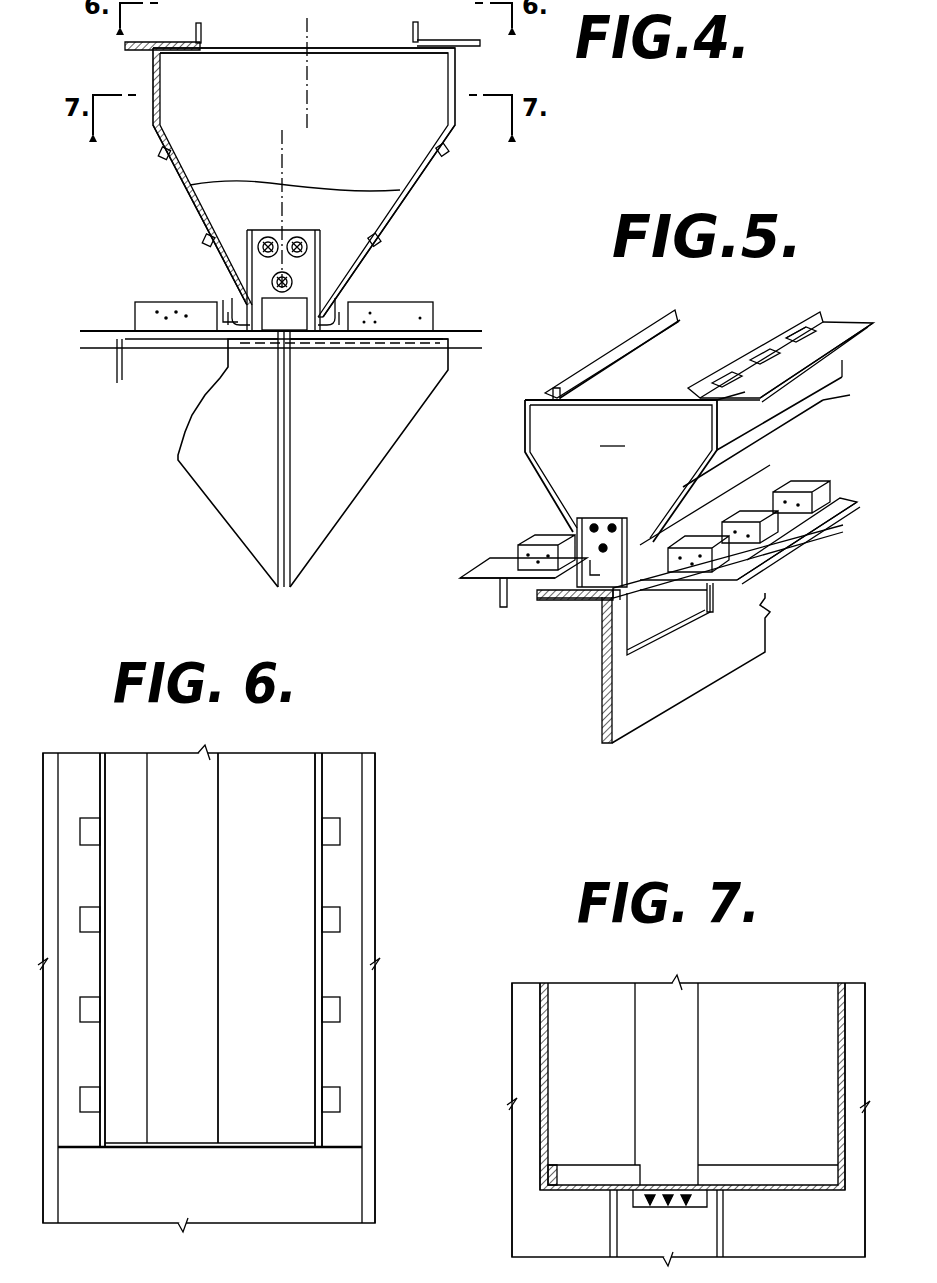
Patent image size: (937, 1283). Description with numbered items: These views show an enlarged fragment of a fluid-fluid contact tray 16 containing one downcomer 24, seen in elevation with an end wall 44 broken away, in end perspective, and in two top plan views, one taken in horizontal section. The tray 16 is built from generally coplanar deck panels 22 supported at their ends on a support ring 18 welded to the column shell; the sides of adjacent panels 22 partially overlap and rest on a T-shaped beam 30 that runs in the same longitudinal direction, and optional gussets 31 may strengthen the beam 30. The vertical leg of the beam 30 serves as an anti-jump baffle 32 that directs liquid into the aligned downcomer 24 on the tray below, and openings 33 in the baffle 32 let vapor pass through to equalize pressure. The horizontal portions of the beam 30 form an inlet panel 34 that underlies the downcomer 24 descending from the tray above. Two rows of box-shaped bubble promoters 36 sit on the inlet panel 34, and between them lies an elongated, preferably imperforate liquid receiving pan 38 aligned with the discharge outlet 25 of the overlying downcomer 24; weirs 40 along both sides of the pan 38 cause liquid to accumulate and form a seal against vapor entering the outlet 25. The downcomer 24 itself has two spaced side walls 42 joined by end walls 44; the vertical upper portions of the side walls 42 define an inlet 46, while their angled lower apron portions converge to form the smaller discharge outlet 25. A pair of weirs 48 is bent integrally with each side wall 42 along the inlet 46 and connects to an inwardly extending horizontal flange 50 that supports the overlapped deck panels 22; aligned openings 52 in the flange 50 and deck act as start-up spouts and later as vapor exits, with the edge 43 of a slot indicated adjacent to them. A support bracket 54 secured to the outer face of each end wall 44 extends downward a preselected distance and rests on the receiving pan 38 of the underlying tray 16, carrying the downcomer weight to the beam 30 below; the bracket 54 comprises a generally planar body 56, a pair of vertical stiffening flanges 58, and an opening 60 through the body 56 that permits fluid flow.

In FIG. 4, the fluid-fluid contact tray 16 is at (136, 50).
In FIG. 5, the fluid-fluid contact tray 16 is at (500, 560).
In FIG. 6, the fluid-fluid contact tray 16 is at (368, 1034).
In FIG. 7, the fluid-fluid contact tray 16 is at (530, 1051).
In FIG. 4, the support ring 18 is at (178, 341).
In FIG. 4, the tray deck panel 22 is at (473, 48).
In FIG. 5, the tray deck panel 22 is at (840, 325).
In FIG. 6, the tray deck panel 22 is at (365, 802).
In FIG. 7, the tray deck panel 22 is at (520, 1017).
In FIG. 4, the downcomer 24 is at (425, 181).
In FIG. 5, the downcomer 24 is at (530, 475).
In FIG. 6, the downcomer 24 is at (252, 752).
In FIG. 7, the downcomer 24 is at (746, 978).
In FIG. 5, the discharge outlet 25 is at (698, 518).
In FIG. 6, the discharge outlet 25 is at (212, 855).
In FIG. 7, the discharge outlet 25 is at (695, 1040).
In FIG. 4, the T-shaped beam 30 is at (276, 450).
In FIG. 5, the T-shaped beam 30 is at (600, 702).
In FIG. 4, the gusset 31 is at (215, 500).
In FIG. 4, the anti-jump baffle 32 is at (290, 512).
In FIG. 5, the anti-jump baffle 32 is at (655, 712).
In FIG. 5, the opening 33 is at (647, 628).
In FIG. 4, the inlet panel 34 is at (382, 342).
In FIG. 5, the inlet panel 34 is at (676, 590).
In FIG. 4, the bubble promoter 36 is at (175, 302).
In FIG. 5, the bubble promoter 36 is at (538, 540).
In FIG. 4, the liquid receiving pan 38 is at (312, 338).
In FIG. 5, the liquid receiving pan 38 is at (548, 600).
In FIG. 4, the weir 40 is at (233, 315).
In FIG. 5, the weir 40 is at (615, 605).
In FIG. 4, the side wall 42 is at (157, 138).
In FIG. 5, the side wall 42 is at (640, 396).
In FIG. 6, the side wall 42 is at (140, 983).
In FIG. 7, the side wall 42 is at (548, 1113).
In FIG. 5, the slot edge 43 is at (795, 330).
In FIG. 4, the end wall 44 is at (378, 213).
In FIG. 5, the end wall 44 is at (612, 436).
In FIG. 6, the end wall 44 is at (275, 1143).
In FIG. 7, the end wall 44 is at (798, 1192).
In FIG. 4, the inlet 46 is at (352, 48).
In FIG. 5, the inlet 46 is at (637, 402).
In FIG. 4, the weir 48 is at (204, 35).
In FIG. 5, the weir 48 is at (618, 350).
In FIG. 6, the weir 48 is at (105, 812).
In FIG. 4, the horizontal flange 50 is at (182, 60).
In FIG. 5, the horizontal flange 50 is at (805, 318).
In FIG. 6, the horizontal flange 50 is at (92, 878).
In FIG. 5, the opening 52 is at (752, 362).
In FIG. 6, the opening 52 is at (90, 930).
In FIG. 4, the support bracket 54 is at (300, 270).
In FIG. 5, the support bracket 54 is at (580, 520).
In FIG. 7, the support bracket 54 is at (685, 1185).
In FIG. 4, the planar body 56 is at (255, 262).
In FIG. 5, the planar body 56 is at (596, 522).
In FIG. 7, the planar body 56 is at (660, 1208).
In FIG. 4, the stiffening flange 58 is at (320, 268).
In FIG. 5, the stiffening flange 58 is at (628, 528).
In FIG. 7, the stiffening flange 58 is at (703, 1208).
In FIG. 4, the opening 60 is at (270, 338).
In FIG. 5, the opening 60 is at (605, 572).